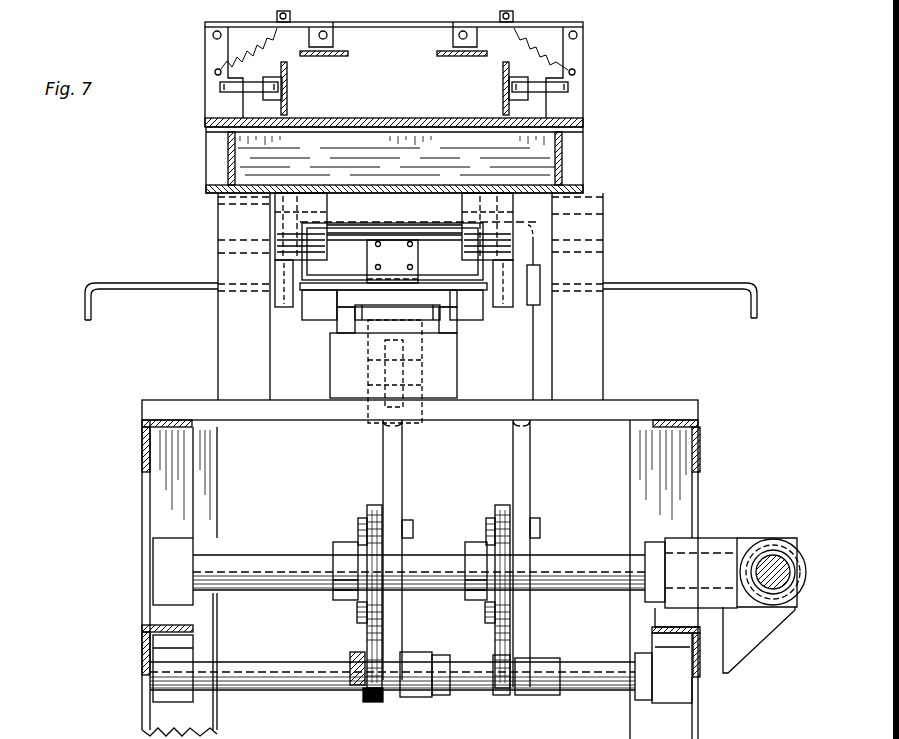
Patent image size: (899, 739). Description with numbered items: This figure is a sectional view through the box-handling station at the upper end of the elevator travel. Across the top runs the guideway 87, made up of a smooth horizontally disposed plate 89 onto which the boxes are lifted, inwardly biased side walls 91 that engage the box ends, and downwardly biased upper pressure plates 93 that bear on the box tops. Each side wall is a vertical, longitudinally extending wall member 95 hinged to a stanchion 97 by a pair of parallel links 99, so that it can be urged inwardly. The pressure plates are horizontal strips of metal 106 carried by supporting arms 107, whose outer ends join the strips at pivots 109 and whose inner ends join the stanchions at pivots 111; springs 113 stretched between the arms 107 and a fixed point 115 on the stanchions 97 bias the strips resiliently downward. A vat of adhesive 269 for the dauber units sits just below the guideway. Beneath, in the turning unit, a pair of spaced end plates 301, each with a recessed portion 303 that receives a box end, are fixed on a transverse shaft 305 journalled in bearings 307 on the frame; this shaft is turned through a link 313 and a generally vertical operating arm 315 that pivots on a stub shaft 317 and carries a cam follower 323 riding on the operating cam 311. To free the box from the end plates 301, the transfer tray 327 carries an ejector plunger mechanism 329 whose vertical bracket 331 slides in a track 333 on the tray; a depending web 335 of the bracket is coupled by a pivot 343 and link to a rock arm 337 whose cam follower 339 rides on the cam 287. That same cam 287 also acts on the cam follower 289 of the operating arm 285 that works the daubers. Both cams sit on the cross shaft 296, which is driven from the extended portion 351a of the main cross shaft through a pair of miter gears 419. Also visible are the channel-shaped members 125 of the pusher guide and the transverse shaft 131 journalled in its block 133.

The guideway 87 is at (425, 95).
The horizontally disposed plate 89 is at (362, 118).
The side walls 91 is at (290, 82).
The upper pressure plates 93 is at (388, 46).
The wall members 95 is at (285, 100).
The stanchions 97 is at (212, 95).
The links 99 is at (248, 88).
The strips of metal 106 is at (436, 52).
The supporting arms 107 is at (310, 37).
The pivots 109 is at (500, 18).
The pivots 111 is at (213, 32).
The springs 113 is at (230, 52).
The fixed point 115 is at (215, 72).
The channel-shaped members 125 is at (413, 734).
The shaft 131 is at (384, 733).
The block 133 is at (454, 733).
The vat of adhesive 269 is at (578, 152).
The operating arm 285 is at (360, 688).
The cam 287 is at (350, 545).
The cam follower 289 is at (362, 645).
The shaft 296 is at (292, 570).
The end plates 301 is at (300, 300).
The recessed portion 303 is at (310, 290).
The shaft 305 is at (332, 214).
The bearings 307 is at (218, 200).
The operating cam 311 is at (500, 610).
The link 313 is at (540, 310).
The operating arm 315 is at (525, 455).
The stub shaft 317 is at (272, 645).
The cam follower 323 is at (494, 512).
The transfer tray 327 is at (683, 278).
The ejector plunger mechanism 329 is at (424, 278).
The bracket 331 is at (400, 245).
The track 333 is at (358, 320).
The depending web 335 is at (420, 350).
The rock arm 337 is at (402, 470).
The cam follower 339 is at (367, 515).
The pivot 343 is at (368, 358).
The extended portion of the cross shaft 351a is at (777, 615).
The miter gears 419 is at (748, 530).